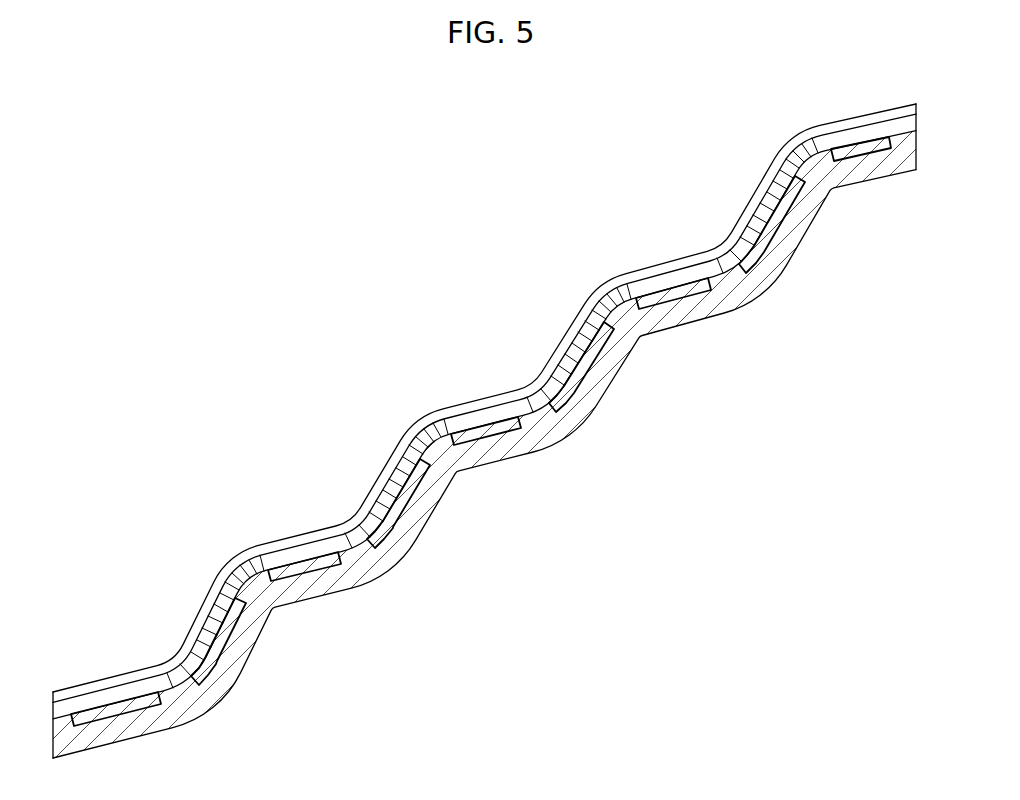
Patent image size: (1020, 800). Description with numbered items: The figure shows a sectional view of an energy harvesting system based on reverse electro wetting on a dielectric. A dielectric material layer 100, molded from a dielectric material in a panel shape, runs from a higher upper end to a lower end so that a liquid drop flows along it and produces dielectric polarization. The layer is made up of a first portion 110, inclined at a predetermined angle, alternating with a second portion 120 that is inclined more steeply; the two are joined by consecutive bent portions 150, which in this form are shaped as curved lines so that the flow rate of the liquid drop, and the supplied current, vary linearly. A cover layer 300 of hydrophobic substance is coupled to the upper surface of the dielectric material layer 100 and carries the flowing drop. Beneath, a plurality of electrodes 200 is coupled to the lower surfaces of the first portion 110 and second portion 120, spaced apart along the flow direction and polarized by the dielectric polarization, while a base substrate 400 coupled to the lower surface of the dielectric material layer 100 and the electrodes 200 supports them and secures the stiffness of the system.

The dielectric material layer 100 is at (775, 176).
The first portion 110 is at (680, 272).
The second portion 120 is at (767, 212).
The bent portion 150 is at (607, 303).
The electrode 200 is at (667, 297).
The cover layer 300 is at (430, 418).
The base substrate 400 is at (757, 277).